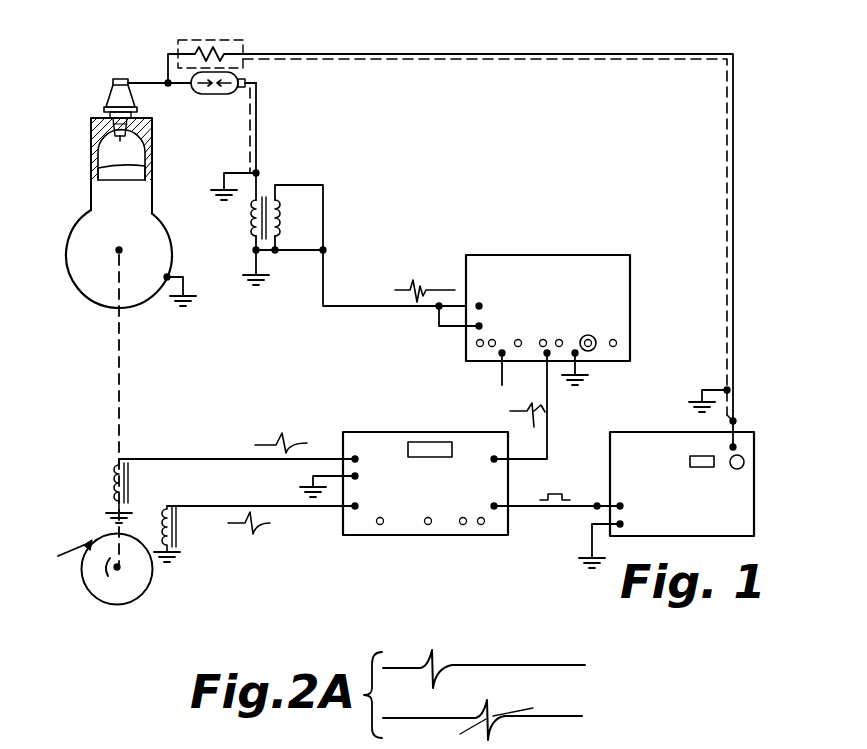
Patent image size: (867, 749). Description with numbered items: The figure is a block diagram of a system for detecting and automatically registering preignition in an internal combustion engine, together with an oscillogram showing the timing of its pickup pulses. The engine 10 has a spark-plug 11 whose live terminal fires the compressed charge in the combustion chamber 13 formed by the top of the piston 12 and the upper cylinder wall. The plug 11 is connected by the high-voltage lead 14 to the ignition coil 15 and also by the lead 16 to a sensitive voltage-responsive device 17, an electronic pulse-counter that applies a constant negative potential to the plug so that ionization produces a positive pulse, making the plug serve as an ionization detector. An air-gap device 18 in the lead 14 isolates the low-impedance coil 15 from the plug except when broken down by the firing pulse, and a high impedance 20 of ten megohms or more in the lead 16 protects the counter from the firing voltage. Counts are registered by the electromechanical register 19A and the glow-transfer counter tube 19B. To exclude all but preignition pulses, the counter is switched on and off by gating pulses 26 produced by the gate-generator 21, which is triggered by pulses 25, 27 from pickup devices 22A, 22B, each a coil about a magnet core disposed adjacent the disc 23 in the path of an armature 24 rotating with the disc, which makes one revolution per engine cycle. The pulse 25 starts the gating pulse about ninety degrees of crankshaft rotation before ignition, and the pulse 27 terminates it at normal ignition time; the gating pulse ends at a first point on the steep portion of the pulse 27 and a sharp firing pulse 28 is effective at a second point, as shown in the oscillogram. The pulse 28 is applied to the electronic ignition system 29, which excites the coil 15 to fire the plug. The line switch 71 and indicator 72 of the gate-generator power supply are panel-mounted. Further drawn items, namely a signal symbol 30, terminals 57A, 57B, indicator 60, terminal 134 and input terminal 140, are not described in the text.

In FIG. 1, the engine 10 is at (80, 251).
In FIG. 1, the spark-plug 11 is at (118, 100).
In FIG. 1, the piston 12 is at (105, 172).
In FIG. 1, the combustion chamber 13 is at (113, 155).
In FIG. 1, the high-voltage lead 14 is at (261, 128).
In FIG. 1, the ignition coil 15 is at (226, 243).
In FIG. 1, the lead 16 is at (465, 53).
In FIG. 1, the voltage-responsive device 17 is at (743, 443).
In FIG. 1, the air-gap device 18 is at (225, 91).
In FIG. 1, the electromechanical register 19A is at (706, 459).
In FIG. 1, the glow-transfer counter tube 19B is at (744, 462).
In FIG. 1, the high impedance 20 is at (207, 49).
In FIG. 1, the gate-generator 21 is at (372, 432).
In FIG. 1, the pickup device 22A is at (178, 530).
In FIG. 1, the pickup device 22B is at (111, 486).
In FIG. 1, the disc 23 is at (120, 597).
In FIG. 1, the armature 24 is at (58, 556).
In FIG. 1, the pulse 25 is at (268, 524).
In FIG. 2A, the pulse 25 is at (435, 654).
In FIG. 1, the gating pulse 26 is at (561, 493).
In FIG. 2A, the gating pulse 26 is at (398, 745).
In FIG. 1, the pulse 27 is at (284, 438).
In FIG. 2A, the pulse 27 is at (492, 710).
In FIG. 1, the sharp pulse 28 is at (515, 406).
In FIG. 1, the electronic ignition system 29 is at (615, 297).
In FIG. 1, the ignition signal 30 is at (418, 289).
In FIG. 1, the gate generator terminal 57A is at (463, 525).
In FIG. 1, the gate generator terminal 57B is at (484, 524).
In FIG. 1, the gate generator indicator 60 is at (430, 446).
In FIG. 1, the line switch 71 is at (425, 525).
In FIG. 1, the indicator 72 is at (377, 525).
In FIG. 1, the ignition unit terminal 134 is at (594, 350).
In FIG. 1, the pulse counter input terminal 140 is at (735, 445).